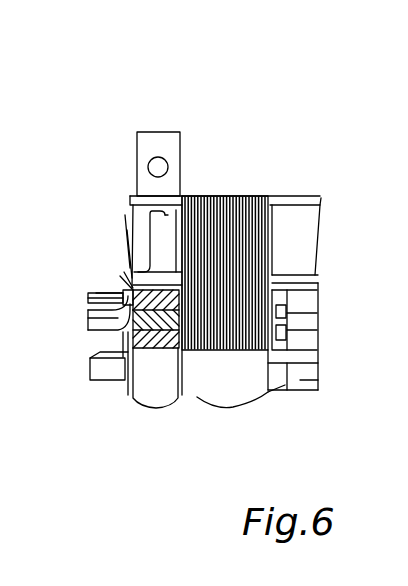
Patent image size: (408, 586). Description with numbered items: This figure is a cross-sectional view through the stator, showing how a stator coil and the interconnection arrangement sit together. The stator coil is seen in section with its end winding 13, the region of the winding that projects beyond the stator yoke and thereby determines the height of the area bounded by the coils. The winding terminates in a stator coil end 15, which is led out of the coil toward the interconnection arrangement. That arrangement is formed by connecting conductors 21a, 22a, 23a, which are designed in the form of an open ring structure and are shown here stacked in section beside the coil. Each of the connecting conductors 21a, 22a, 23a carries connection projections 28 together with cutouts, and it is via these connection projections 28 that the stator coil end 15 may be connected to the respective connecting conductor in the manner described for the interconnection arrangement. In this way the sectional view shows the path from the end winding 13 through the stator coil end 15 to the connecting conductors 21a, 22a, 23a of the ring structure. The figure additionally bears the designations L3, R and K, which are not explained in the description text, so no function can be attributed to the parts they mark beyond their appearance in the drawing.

The connection lug L3 is at (150, 143).
The relay coil R is at (203, 194).
The end winding 13 is at (262, 197).
The connecting conductor 21a is at (124, 272).
The stator coil end 15 is at (132, 226).
The contact K is at (102, 296).
The connection projection 28 is at (98, 313).
The connecting conductor 22a is at (92, 357).
The connecting conductor 23a is at (133, 346).